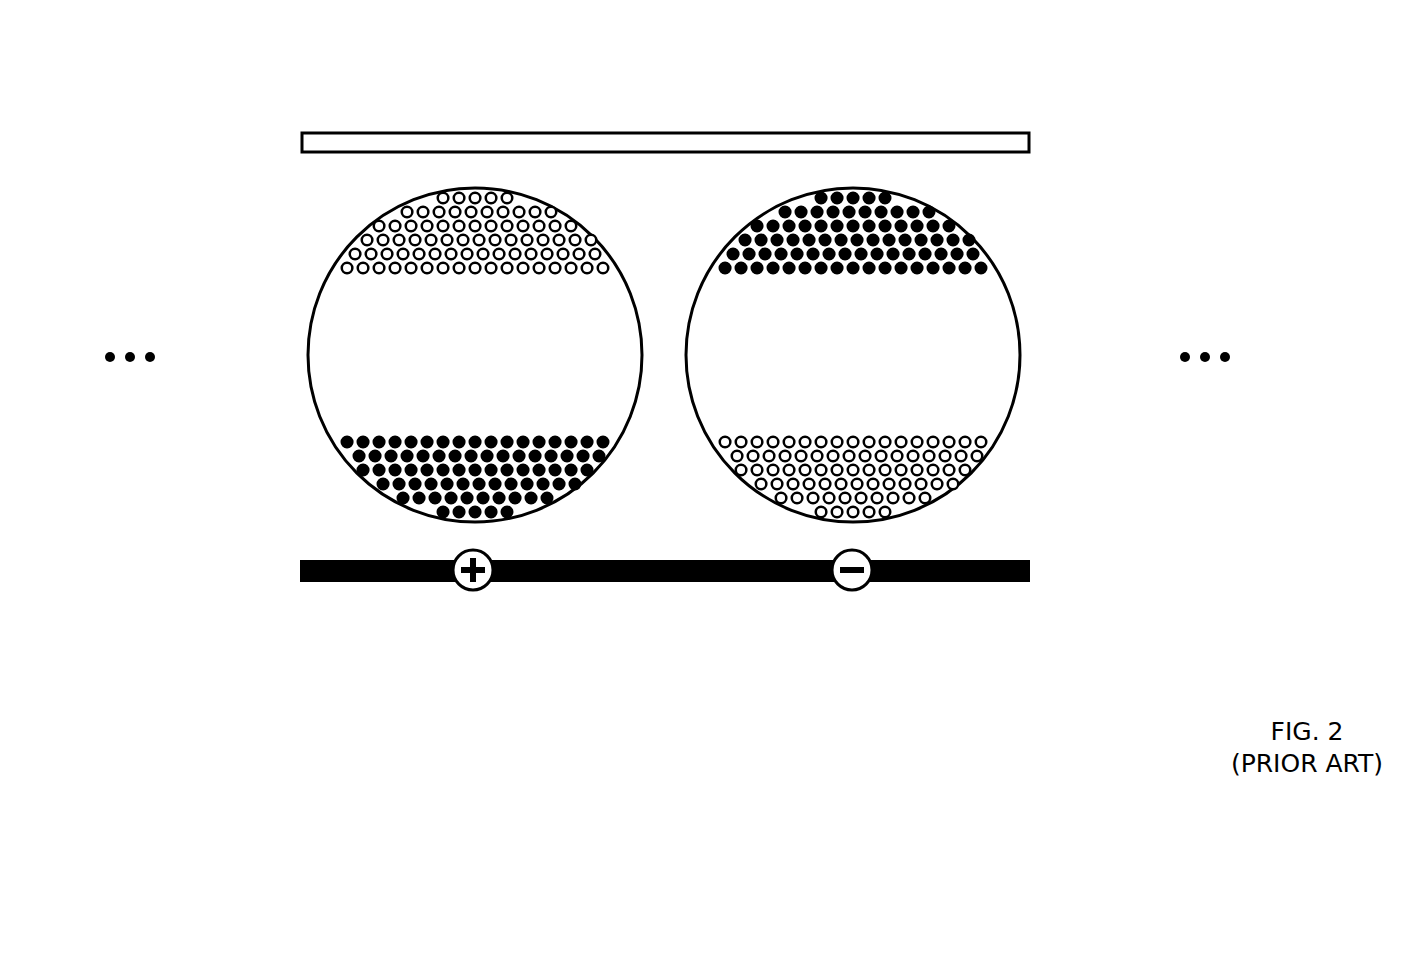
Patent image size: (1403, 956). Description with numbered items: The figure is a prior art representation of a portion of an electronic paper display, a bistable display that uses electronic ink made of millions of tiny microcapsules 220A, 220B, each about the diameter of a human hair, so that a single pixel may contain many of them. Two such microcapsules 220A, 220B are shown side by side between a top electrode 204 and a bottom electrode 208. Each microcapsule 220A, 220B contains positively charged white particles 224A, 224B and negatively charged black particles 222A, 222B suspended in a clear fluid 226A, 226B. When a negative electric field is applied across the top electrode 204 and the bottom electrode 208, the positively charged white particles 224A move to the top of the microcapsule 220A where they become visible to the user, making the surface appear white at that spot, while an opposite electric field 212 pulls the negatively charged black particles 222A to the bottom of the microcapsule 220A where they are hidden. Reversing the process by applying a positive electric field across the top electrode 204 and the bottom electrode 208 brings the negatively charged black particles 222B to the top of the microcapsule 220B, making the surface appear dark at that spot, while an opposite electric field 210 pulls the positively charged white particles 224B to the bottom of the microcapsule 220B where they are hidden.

The top electrode 204 is at (1030, 142).
The bottom electrode 208 is at (1030, 567).
The opposite electric field 210 is at (867, 585).
The opposite electric field 212 is at (488, 585).
The microcapsule 220A is at (381, 203).
The microcapsule 220B is at (981, 203).
The negatively charged black particles 222A is at (340, 448).
The negatively charged black particles 222B is at (968, 240).
The positively charged white particles 224A is at (345, 263).
The positively charged white particles 224B is at (995, 447).
The clear fluid 226A is at (320, 350).
The clear fluid 226B is at (1007, 364).